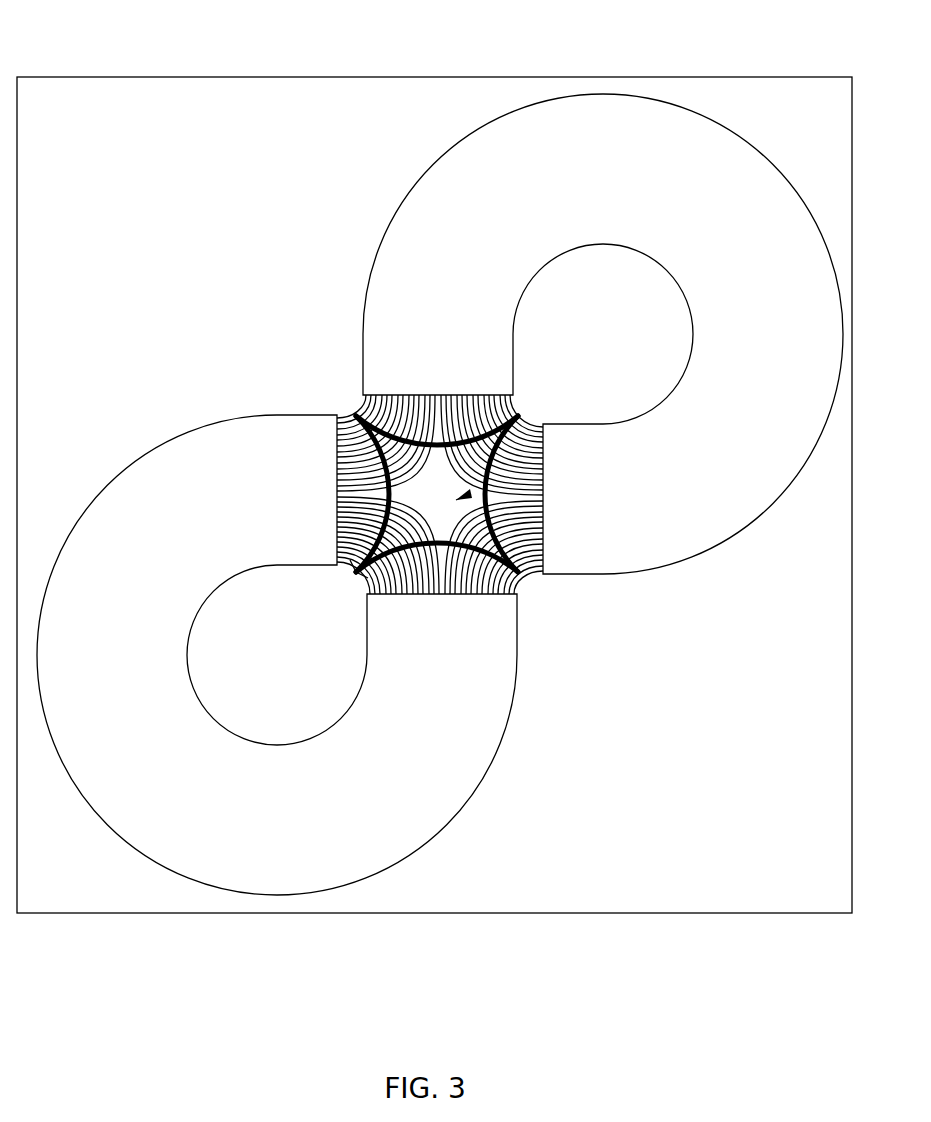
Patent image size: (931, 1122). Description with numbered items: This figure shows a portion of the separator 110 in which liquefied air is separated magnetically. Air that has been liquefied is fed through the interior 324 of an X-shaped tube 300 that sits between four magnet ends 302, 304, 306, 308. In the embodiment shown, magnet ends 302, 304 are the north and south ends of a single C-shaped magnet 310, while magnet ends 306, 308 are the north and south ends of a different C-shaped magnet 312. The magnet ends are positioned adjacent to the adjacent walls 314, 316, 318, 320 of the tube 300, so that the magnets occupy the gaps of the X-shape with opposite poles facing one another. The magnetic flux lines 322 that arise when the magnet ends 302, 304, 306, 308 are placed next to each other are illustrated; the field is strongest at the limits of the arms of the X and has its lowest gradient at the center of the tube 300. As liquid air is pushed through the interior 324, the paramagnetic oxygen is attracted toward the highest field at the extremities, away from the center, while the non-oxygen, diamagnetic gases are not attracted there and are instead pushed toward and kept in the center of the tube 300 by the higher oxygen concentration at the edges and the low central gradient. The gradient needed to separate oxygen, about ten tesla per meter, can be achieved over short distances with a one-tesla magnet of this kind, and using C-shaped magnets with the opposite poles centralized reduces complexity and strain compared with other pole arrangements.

The separator 110 is at (150, 77).
The X-shaped tube 300 is at (356, 418).
The magnet end 302 is at (514, 380).
The magnet end 304 is at (563, 424).
The magnet end 306 is at (518, 600).
The magnet end 308 is at (300, 415).
The C-shaped magnet 310 is at (397, 211).
The C-shaped magnet 312 is at (124, 470).
The wall 314 is at (438, 440).
The wall 316 is at (520, 568).
The wall 318 is at (440, 556).
The wall 320 is at (386, 493).
The magnetic flux lines 322 is at (375, 585).
The interior 324 is at (471, 494).